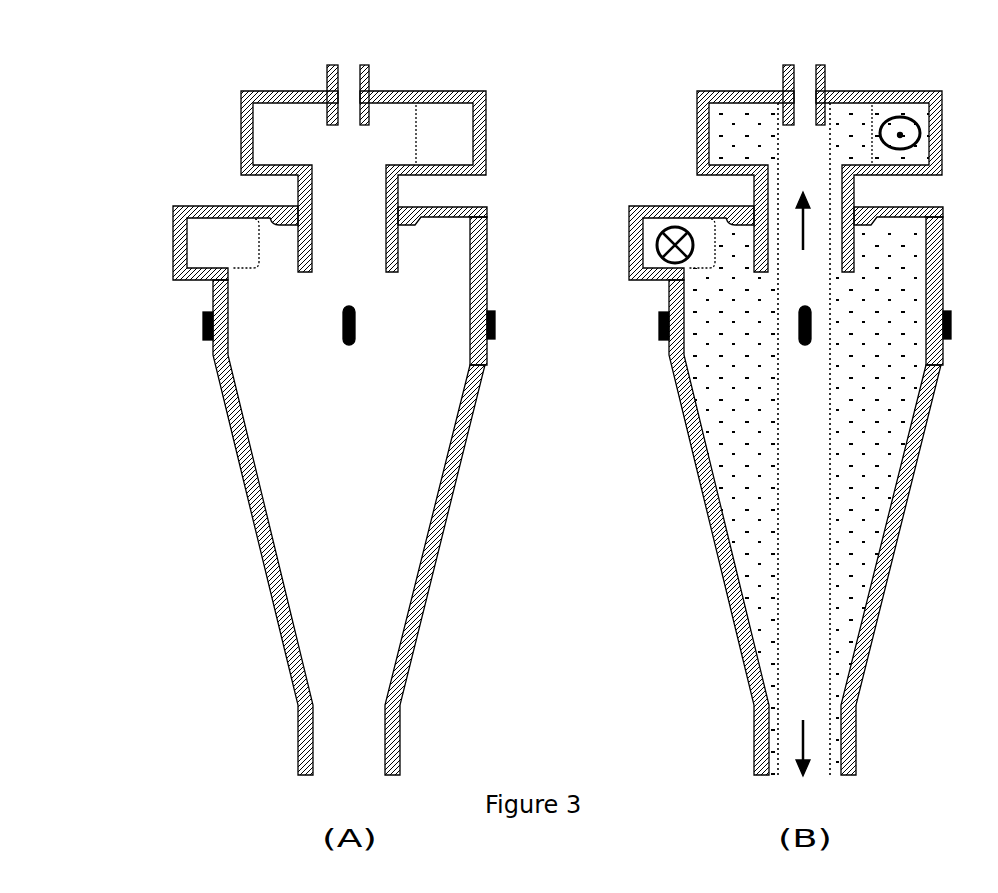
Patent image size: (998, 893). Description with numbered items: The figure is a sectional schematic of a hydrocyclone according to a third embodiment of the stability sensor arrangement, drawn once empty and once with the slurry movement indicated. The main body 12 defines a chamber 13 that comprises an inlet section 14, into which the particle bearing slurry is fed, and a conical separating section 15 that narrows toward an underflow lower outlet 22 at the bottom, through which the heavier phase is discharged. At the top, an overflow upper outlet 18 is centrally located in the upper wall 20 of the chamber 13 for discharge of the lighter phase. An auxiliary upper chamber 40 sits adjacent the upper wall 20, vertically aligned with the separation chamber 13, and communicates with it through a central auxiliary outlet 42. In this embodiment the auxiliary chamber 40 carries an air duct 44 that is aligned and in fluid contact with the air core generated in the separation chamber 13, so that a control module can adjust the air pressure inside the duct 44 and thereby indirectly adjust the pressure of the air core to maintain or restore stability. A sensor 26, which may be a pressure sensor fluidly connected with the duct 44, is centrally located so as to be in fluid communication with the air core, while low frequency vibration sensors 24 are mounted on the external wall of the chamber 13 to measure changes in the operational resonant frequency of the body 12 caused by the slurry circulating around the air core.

The auxiliary upper chamber 40 is at (235, 108).
The upper outlet 18 is at (363, 134).
The air duct 44 is at (348, 77).
The auxiliary outlet 42 is at (349, 218).
The main body 12 is at (163, 248).
The inlet section 14 is at (223, 243).
The conical separating section 15 is at (450, 515).
The chamber 13 is at (483, 260).
The upper wall 20 is at (465, 203).
The vibration sensors 24 is at (203, 327).
The sensor 26 is at (372, 317).
The lower outlet 22 is at (349, 740).